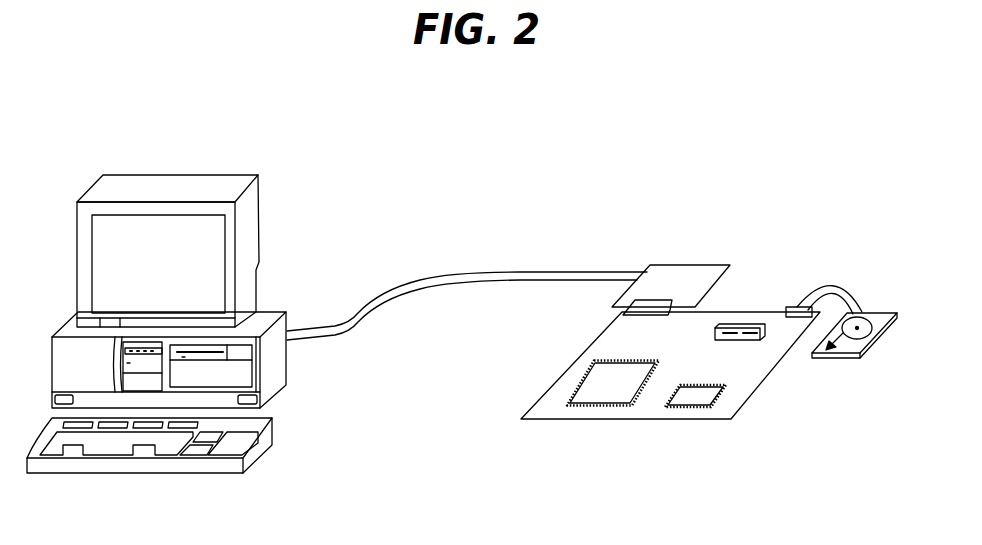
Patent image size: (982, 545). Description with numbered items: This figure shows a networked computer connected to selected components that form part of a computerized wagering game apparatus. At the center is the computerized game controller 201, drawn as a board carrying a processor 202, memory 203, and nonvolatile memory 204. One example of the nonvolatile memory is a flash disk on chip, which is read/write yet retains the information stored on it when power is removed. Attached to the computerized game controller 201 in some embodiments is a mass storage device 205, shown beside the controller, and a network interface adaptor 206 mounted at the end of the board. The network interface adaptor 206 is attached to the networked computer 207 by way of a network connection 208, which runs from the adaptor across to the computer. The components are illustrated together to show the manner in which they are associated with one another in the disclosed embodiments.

The computerized game controller 201 is at (720, 412).
The processor 202 is at (597, 390).
The memory 203 is at (740, 325).
The nonvolatile memory 204 is at (690, 397).
The mass storage device 205 is at (880, 347).
The network interface adaptor 206 is at (690, 265).
The networked computer 207 is at (272, 312).
The network connection 208 is at (507, 270).